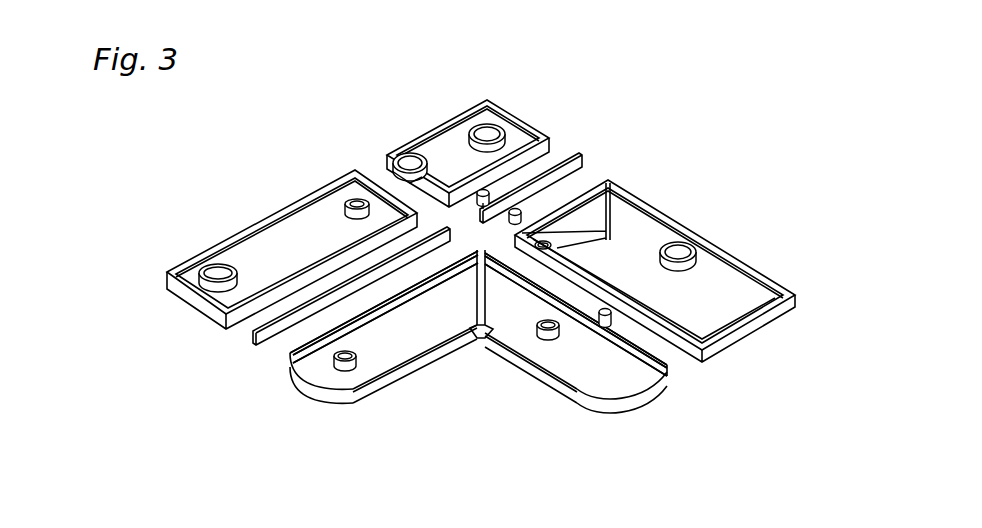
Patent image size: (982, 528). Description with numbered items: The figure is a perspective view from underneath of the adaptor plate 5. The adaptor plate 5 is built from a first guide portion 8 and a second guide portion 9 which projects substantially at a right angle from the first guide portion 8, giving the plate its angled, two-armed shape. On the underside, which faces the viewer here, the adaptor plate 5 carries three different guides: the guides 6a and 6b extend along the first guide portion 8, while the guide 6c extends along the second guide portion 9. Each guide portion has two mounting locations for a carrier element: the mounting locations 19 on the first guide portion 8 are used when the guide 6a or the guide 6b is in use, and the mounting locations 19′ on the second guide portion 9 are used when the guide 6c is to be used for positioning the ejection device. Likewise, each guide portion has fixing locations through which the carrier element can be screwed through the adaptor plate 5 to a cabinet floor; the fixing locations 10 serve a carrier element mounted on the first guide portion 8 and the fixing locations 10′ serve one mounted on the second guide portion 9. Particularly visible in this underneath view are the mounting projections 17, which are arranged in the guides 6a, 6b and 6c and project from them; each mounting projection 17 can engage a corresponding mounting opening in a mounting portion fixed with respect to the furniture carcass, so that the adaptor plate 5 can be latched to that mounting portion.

The adaptor plate 5 is at (753, 257).
The guide 6a is at (247, 323).
The guide 6b is at (283, 343).
The guide 6c is at (667, 352).
The first guide portion 8 is at (418, 323).
The second guide portion 9 is at (567, 352).
The fixing location 10 is at (341, 364).
The fixing location 10′ is at (350, 200).
The mounting projection 17 is at (484, 190).
The mounting location 19 is at (216, 273).
The mounting location 19′ is at (492, 133).